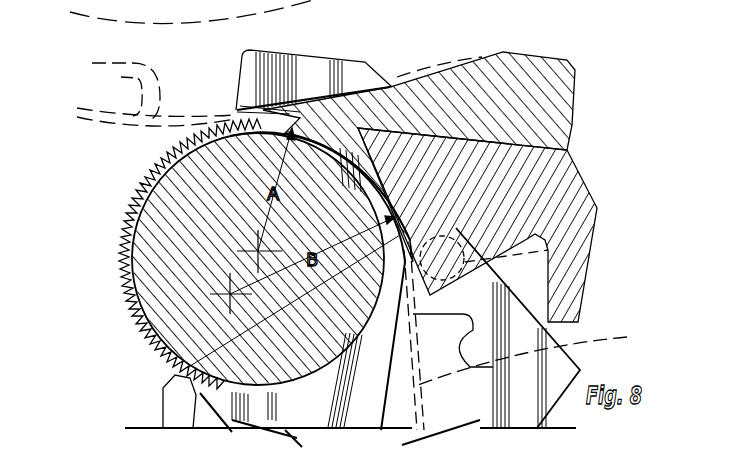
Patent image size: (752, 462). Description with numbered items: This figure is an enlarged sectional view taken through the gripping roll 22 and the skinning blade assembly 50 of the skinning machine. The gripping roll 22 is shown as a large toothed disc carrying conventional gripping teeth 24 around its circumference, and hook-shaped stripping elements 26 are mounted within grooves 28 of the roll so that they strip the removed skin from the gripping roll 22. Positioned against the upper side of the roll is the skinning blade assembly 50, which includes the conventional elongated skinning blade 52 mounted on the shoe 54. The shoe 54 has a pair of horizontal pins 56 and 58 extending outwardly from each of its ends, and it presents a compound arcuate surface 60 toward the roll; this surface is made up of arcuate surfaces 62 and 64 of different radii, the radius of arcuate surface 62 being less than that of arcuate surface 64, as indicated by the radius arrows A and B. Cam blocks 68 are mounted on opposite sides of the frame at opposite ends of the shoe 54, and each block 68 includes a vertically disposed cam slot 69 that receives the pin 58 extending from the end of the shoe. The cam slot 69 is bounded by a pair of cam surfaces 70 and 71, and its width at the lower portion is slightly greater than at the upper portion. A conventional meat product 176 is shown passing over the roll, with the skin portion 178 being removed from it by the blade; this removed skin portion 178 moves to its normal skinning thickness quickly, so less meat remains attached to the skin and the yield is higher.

The gripping roll 22 is at (112, 273).
The gripping teeth 24 is at (117, 285).
The stripping elements 26 is at (165, 388).
The grooves 28 is at (118, 252).
The skinning blade assembly 50 is at (576, 128).
The skinning blade 52 is at (310, 127).
The shoe 54 is at (568, 151).
The horizontal pin 56 is at (352, 88).
The horizontal pin 58 is at (430, 277).
The compound arcuate surface 60 is at (300, 148).
The arcuate surface 62 is at (287, 134).
The arcuate surface 64 is at (178, 373).
The cam block 68 is at (460, 360).
The cam slot 69 is at (430, 312).
The cam surface 70 is at (430, 340).
The cam surface 71 is at (445, 345).
The meat product 176 is at (147, 88).
The skin portion 178 is at (366, 226).